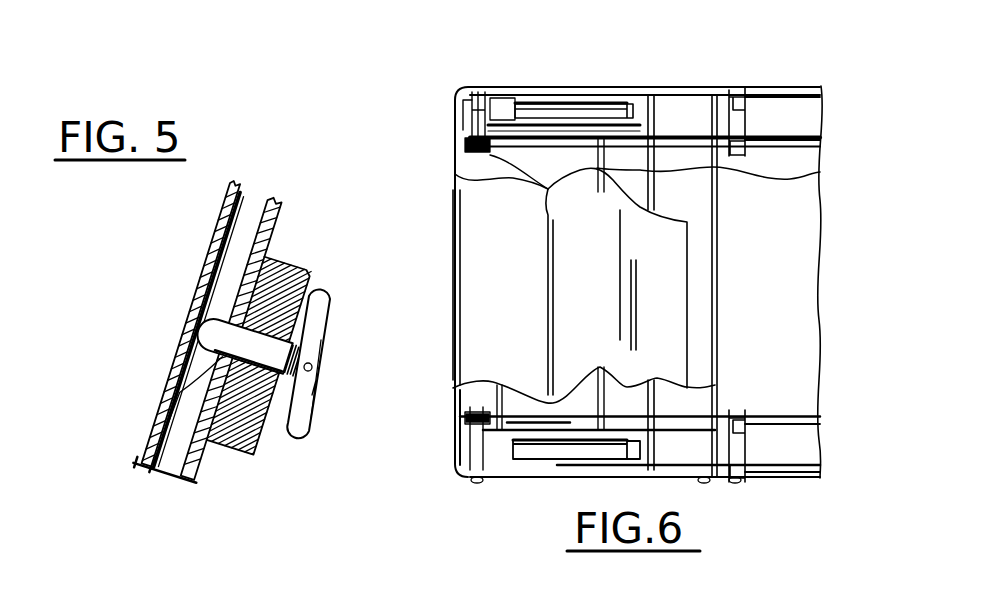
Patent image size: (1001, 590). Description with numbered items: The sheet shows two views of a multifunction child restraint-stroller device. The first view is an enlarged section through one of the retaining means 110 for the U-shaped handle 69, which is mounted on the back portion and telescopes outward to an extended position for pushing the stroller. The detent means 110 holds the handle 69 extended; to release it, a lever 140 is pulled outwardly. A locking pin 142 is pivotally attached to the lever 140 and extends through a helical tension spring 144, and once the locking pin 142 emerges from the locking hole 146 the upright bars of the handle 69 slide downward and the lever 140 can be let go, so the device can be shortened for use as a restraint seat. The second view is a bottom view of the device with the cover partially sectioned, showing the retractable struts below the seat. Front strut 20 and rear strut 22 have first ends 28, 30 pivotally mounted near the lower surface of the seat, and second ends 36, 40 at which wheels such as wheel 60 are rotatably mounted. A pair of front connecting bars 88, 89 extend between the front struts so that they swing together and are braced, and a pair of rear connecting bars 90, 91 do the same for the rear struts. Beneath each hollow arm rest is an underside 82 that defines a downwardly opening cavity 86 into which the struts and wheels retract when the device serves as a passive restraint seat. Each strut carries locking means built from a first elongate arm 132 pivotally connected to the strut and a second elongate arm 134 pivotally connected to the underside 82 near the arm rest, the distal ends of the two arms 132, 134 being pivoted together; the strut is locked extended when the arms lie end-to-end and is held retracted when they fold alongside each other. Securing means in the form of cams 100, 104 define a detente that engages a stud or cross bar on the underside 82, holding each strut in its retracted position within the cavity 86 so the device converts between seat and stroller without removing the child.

In FIG. 6, the retractable strut 20 is at (662, 88).
In FIG. 6, the retractable strut 22 is at (604, 110).
In FIG. 6, the first end 28 is at (488, 86).
In FIG. 6, the first end 30 is at (747, 99).
In FIG. 6, the second end 36 is at (665, 130).
In FIG. 6, the second end 40 is at (555, 125).
In FIG. 6, the wheel 60 is at (728, 84).
In FIG. 6, the underside 82 is at (504, 103).
In FIG. 6, the downwardly opening cavity 86 is at (500, 92).
In FIG. 6, the front connecting bar 88 is at (480, 146).
In FIG. 6, the front connecting bar 89 is at (552, 192).
In FIG. 6, the rear connecting bar 90 is at (820, 173).
In FIG. 6, the rear connecting bar 91 is at (720, 292).
In FIG. 6, the cam 100 is at (456, 174).
In FIG. 6, the cam 104 is at (683, 100).
In FIG. 6, the first elongate arm 132 is at (520, 133).
In FIG. 6, the second elongate arm 134 is at (540, 133).
In FIG. 5, the U-shaped handle 69 is at (222, 214).
In FIG. 5, the detent means 110 is at (174, 316).
In FIG. 5, the lever 140 is at (313, 400).
In FIG. 5, the locking pin 142 is at (230, 327).
In FIG. 5, the helical tension spring 144 is at (305, 413).
In FIG. 5, the locking hole 146 is at (145, 468).